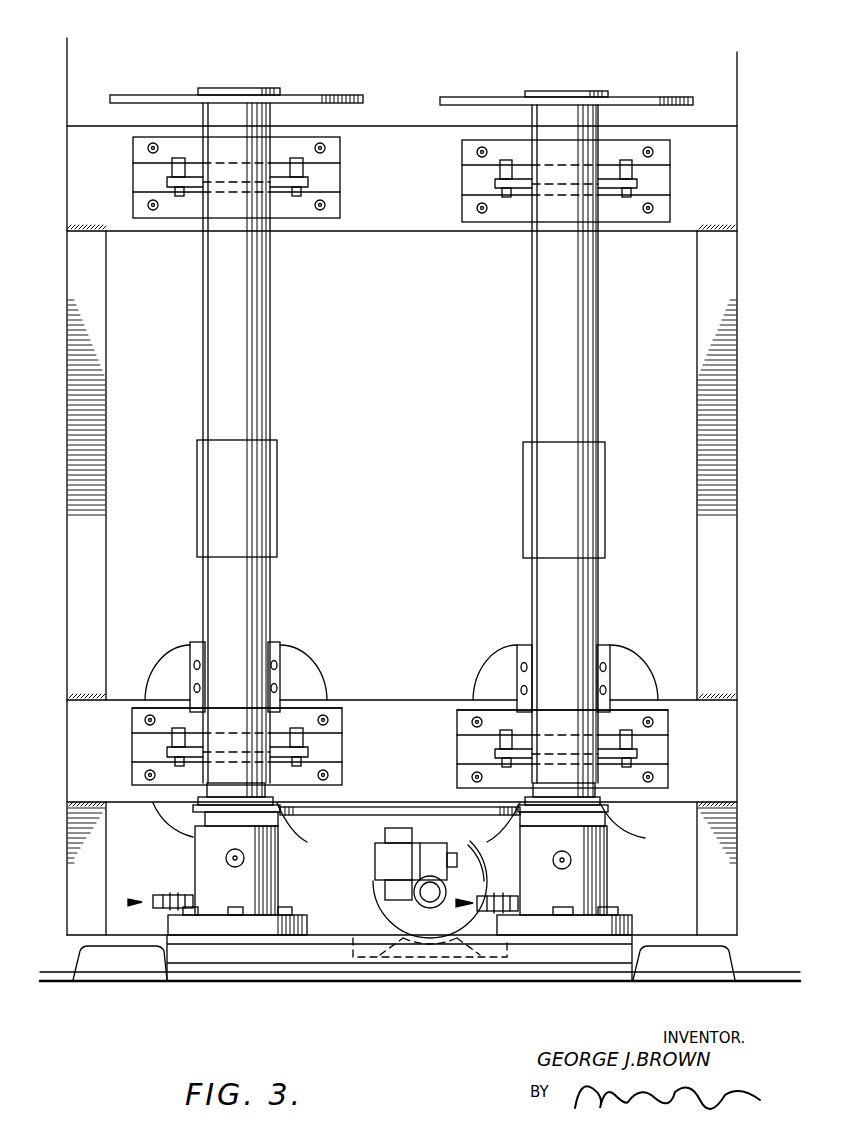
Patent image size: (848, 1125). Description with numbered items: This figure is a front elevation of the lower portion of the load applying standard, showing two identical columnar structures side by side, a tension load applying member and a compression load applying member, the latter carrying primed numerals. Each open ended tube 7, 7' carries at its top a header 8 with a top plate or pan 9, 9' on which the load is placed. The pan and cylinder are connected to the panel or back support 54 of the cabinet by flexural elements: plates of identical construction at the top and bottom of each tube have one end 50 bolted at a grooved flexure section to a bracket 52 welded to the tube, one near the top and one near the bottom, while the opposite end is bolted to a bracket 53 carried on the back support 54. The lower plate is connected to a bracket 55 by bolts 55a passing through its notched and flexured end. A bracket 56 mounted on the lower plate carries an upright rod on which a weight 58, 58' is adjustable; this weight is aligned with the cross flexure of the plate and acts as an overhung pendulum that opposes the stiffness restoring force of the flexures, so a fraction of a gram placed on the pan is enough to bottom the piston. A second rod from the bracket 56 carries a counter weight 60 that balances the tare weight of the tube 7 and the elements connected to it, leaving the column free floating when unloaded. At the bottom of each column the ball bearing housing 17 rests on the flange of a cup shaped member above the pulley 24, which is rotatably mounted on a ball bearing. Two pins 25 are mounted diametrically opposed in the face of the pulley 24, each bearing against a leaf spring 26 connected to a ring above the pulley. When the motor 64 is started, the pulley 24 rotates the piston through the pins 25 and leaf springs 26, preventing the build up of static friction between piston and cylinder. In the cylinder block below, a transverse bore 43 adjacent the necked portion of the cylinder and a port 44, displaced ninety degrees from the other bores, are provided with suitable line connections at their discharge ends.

The open ended tube 7 is at (537, 444).
The open ended tube of compression load applying member 7' is at (256, 443).
The header 8 is at (228, 108).
The top plate (pan) 9 is at (566, 79).
The top plate (pan) of compression load applying member 9' is at (236, 74).
The ball bearing housing 17 is at (198, 800).
The pulley 24 is at (203, 822).
The pins 25 is at (193, 808).
The leaf spring 26 is at (655, 826).
The transverse bore 43 is at (226, 858).
The port 44 is at (193, 903).
The end of plate 50 is at (298, 170).
The bracket 52 is at (305, 186).
The bracket 53 is at (298, 219).
The panel (back support) 54 is at (402, 226).
The bracket 55 is at (343, 700).
The bolts 55a is at (295, 731).
The bracket 56 is at (280, 645).
The weight 58 is at (591, 500).
The weight of compression load applying member 58' is at (265, 498).
The counter weight 60 is at (158, 683).
The motor 64 is at (598, 896).